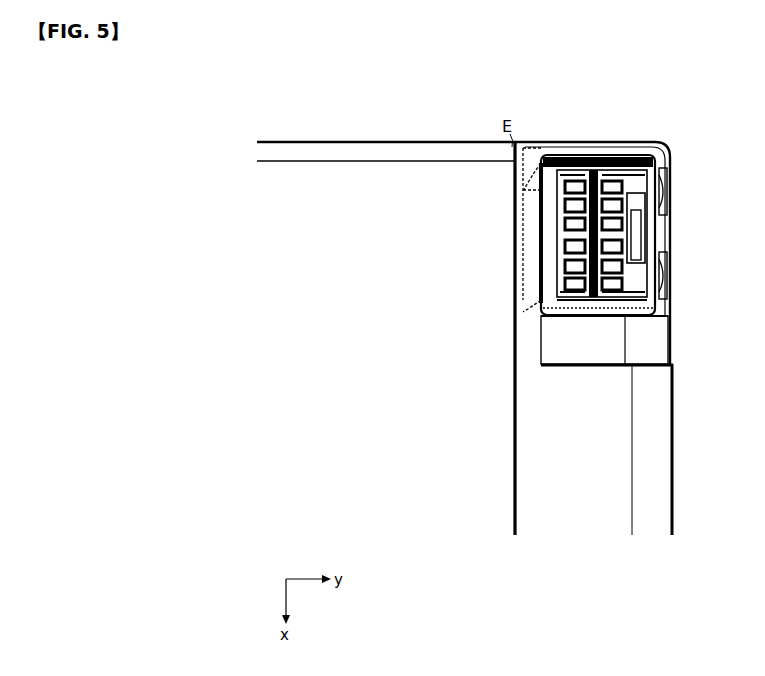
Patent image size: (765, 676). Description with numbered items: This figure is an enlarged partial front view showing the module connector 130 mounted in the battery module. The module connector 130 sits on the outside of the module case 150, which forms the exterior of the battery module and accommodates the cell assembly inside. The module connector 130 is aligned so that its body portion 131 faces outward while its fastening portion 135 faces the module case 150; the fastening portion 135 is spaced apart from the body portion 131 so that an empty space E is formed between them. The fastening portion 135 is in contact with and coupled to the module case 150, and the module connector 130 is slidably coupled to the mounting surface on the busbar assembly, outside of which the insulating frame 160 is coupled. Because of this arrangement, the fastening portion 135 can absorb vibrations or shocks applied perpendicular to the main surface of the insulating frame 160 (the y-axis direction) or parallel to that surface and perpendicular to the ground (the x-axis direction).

The module connector 130 is at (622, 146).
The body portion 131 is at (640, 190).
The fastening portion 135 is at (542, 157).
The module case 150 is at (353, 141).
The insulating frame 160 is at (661, 437).